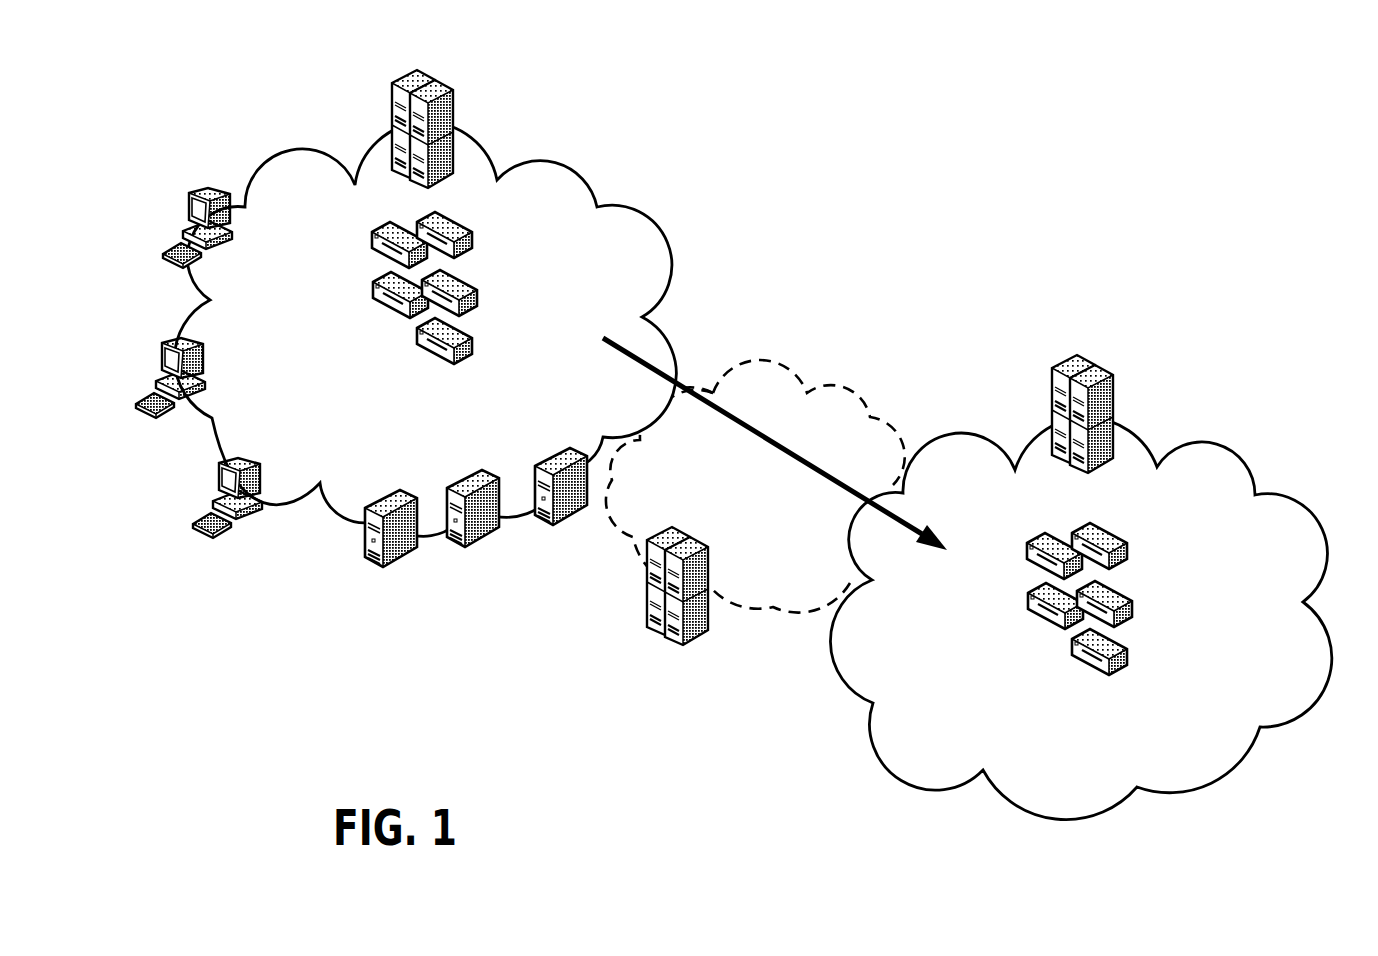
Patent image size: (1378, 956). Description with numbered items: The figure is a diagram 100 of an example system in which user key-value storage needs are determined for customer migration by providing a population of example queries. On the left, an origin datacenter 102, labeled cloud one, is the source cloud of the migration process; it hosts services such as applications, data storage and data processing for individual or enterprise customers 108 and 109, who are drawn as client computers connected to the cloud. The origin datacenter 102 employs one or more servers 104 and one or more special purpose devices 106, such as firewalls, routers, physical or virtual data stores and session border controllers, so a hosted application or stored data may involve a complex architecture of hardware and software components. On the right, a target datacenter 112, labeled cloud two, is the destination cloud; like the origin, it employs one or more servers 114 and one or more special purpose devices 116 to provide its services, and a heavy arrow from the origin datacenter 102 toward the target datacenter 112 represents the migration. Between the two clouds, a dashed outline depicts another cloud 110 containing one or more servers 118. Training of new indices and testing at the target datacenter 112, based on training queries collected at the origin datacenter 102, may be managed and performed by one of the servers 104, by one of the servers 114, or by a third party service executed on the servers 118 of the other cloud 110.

The diagram 100 is at (1215, 125).
The origin datacenter 102 is at (350, 414).
The servers 104 is at (432, 63).
The special purpose devices 106 is at (478, 238).
The customers 108 is at (208, 513).
The customers 109 is at (533, 460).
The another cloud 110 is at (797, 368).
The target datacenter 112 is at (1010, 702).
The servers 114 is at (1092, 350).
The special purpose devices 116 is at (1133, 547).
The servers 118 is at (696, 650).